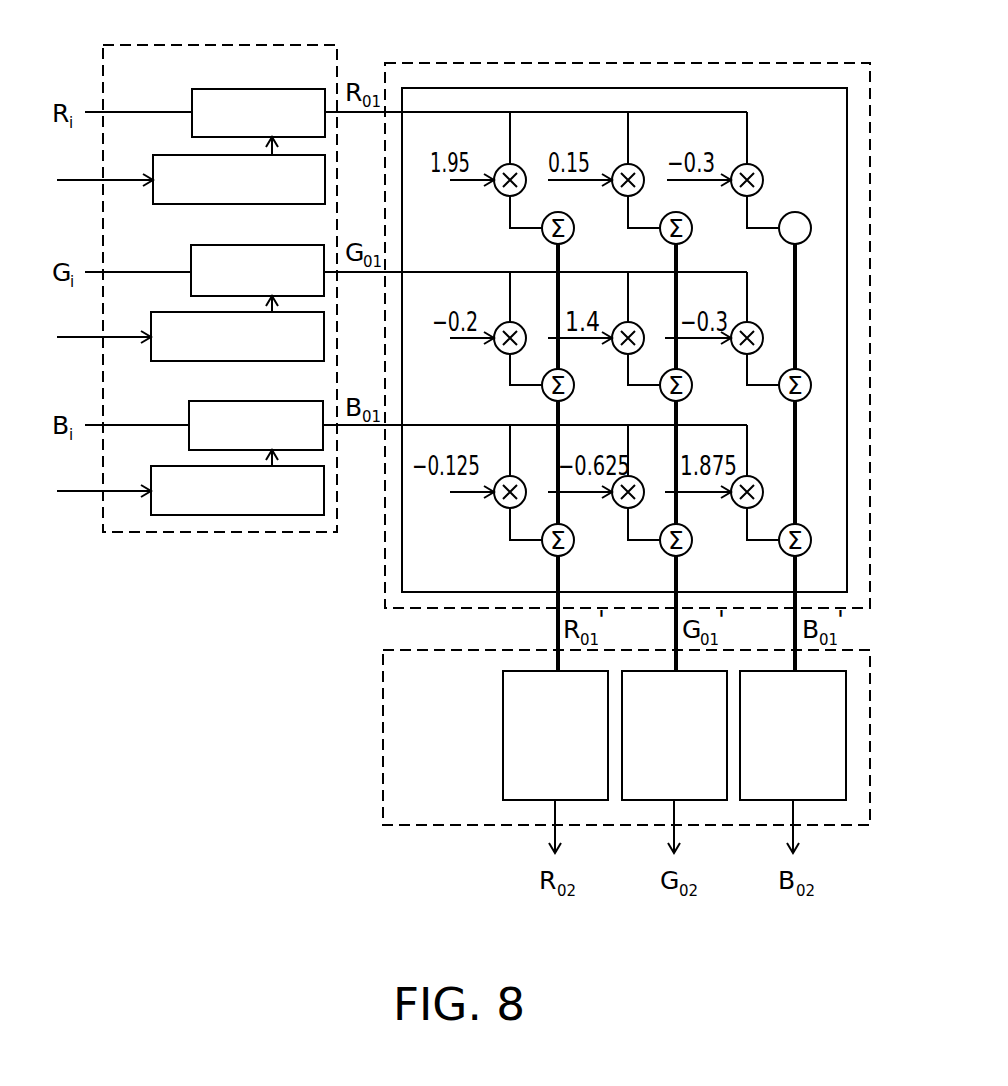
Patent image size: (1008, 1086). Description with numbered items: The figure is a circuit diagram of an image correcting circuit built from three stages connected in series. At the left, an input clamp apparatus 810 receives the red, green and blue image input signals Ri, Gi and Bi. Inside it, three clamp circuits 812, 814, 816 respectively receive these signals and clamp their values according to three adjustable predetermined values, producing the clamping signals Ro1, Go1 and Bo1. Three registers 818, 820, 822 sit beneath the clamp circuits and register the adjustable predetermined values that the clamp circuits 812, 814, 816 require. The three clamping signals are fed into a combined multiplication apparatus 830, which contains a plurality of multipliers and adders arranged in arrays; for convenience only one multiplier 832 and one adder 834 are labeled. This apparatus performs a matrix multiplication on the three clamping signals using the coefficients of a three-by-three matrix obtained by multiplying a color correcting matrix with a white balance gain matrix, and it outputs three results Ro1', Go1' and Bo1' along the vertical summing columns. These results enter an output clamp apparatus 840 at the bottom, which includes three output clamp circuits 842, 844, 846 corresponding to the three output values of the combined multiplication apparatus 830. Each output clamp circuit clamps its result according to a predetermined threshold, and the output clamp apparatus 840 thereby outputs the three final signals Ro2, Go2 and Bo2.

The input clamp apparatus 810 is at (235, 45).
The clamp circuit 812 is at (253, 89).
The clamp circuit 814 is at (250, 245).
The clamp circuit 816 is at (250, 401).
The register 818 is at (175, 155).
The register 820 is at (175, 312).
The register 822 is at (175, 466).
The combined multiplication apparatus 830 is at (707, 63).
The multiplier 832 is at (757, 168).
The adder 834 is at (797, 212).
The output clamp apparatus 840 is at (460, 827).
The output clamp circuit 842 is at (578, 800).
The output clamp circuit 844 is at (697, 800).
The output clamp circuit 846 is at (817, 800).